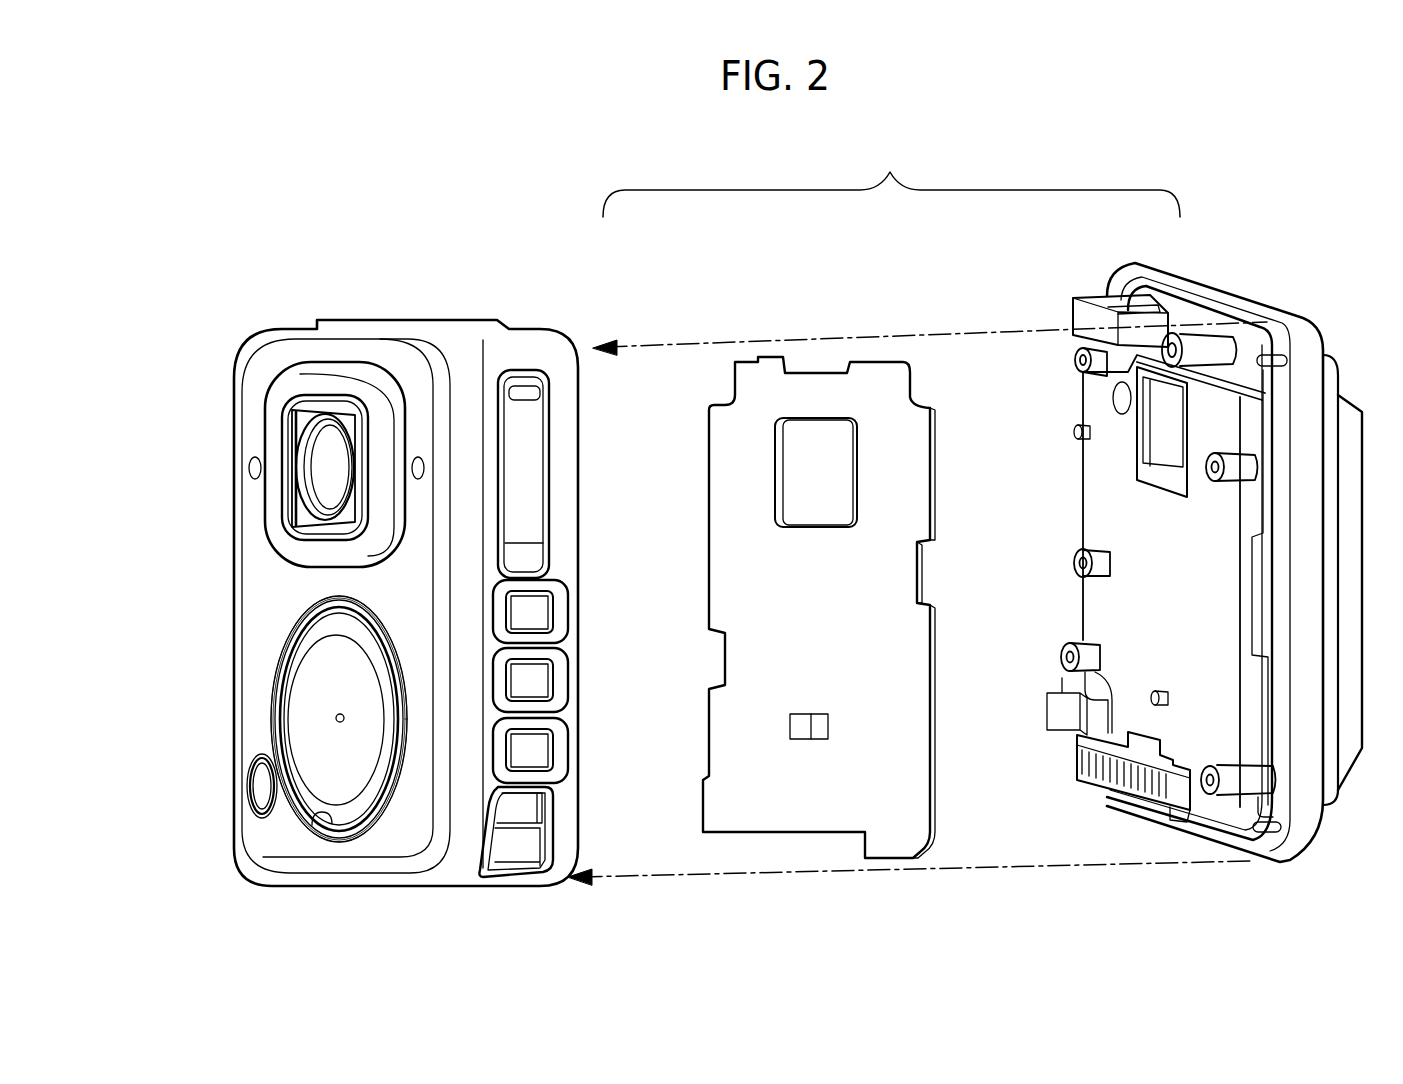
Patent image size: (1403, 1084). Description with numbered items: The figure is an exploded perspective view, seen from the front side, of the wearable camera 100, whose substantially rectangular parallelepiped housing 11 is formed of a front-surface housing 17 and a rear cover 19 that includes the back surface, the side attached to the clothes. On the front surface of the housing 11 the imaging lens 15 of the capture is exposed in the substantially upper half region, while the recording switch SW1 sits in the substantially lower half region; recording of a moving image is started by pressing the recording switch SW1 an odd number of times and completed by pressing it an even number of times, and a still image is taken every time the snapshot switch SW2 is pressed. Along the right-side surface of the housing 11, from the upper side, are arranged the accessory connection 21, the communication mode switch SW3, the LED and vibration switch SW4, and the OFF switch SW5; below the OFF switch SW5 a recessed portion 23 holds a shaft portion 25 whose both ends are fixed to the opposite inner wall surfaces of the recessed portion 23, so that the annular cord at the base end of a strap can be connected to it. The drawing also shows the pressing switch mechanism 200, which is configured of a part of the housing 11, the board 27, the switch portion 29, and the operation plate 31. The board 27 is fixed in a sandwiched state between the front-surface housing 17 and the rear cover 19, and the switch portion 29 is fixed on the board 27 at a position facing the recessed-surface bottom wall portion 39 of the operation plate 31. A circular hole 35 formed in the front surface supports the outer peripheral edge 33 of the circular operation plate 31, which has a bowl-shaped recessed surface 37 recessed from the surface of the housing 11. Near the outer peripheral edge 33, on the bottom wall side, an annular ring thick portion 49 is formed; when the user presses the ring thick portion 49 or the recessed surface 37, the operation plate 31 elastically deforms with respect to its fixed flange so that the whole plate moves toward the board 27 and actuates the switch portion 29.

The wearable camera 100 is at (331, 278).
The pressing switch mechanism 200 is at (419, 574).
The housing 11 is at (891, 171).
The front-surface housing 17 is at (540, 322).
The rear cover 19 is at (1168, 276).
The board 27 is at (930, 472).
The switch portion 29 is at (806, 740).
The imaging lens 15 is at (308, 443).
The accessory connection 21 is at (535, 474).
The recessed portion 23 is at (525, 805).
The shaft portion 25 is at (513, 850).
The operation plate 31 is at (322, 667).
The outer peripheral edge 33 is at (270, 733).
The circular hole 35 is at (327, 822).
The recessed surface 37 is at (306, 695).
The recessed-surface bottom wall portion 39 is at (342, 722).
The ring thick portion 49 is at (328, 628).
The recording switch SW1 is at (270, 686).
The snapshot switch SW2 is at (257, 788).
The communication mode switch SW3 is at (531, 607).
The LED and vibration switch SW4 is at (531, 677).
The OFF switch SW5 is at (531, 749).